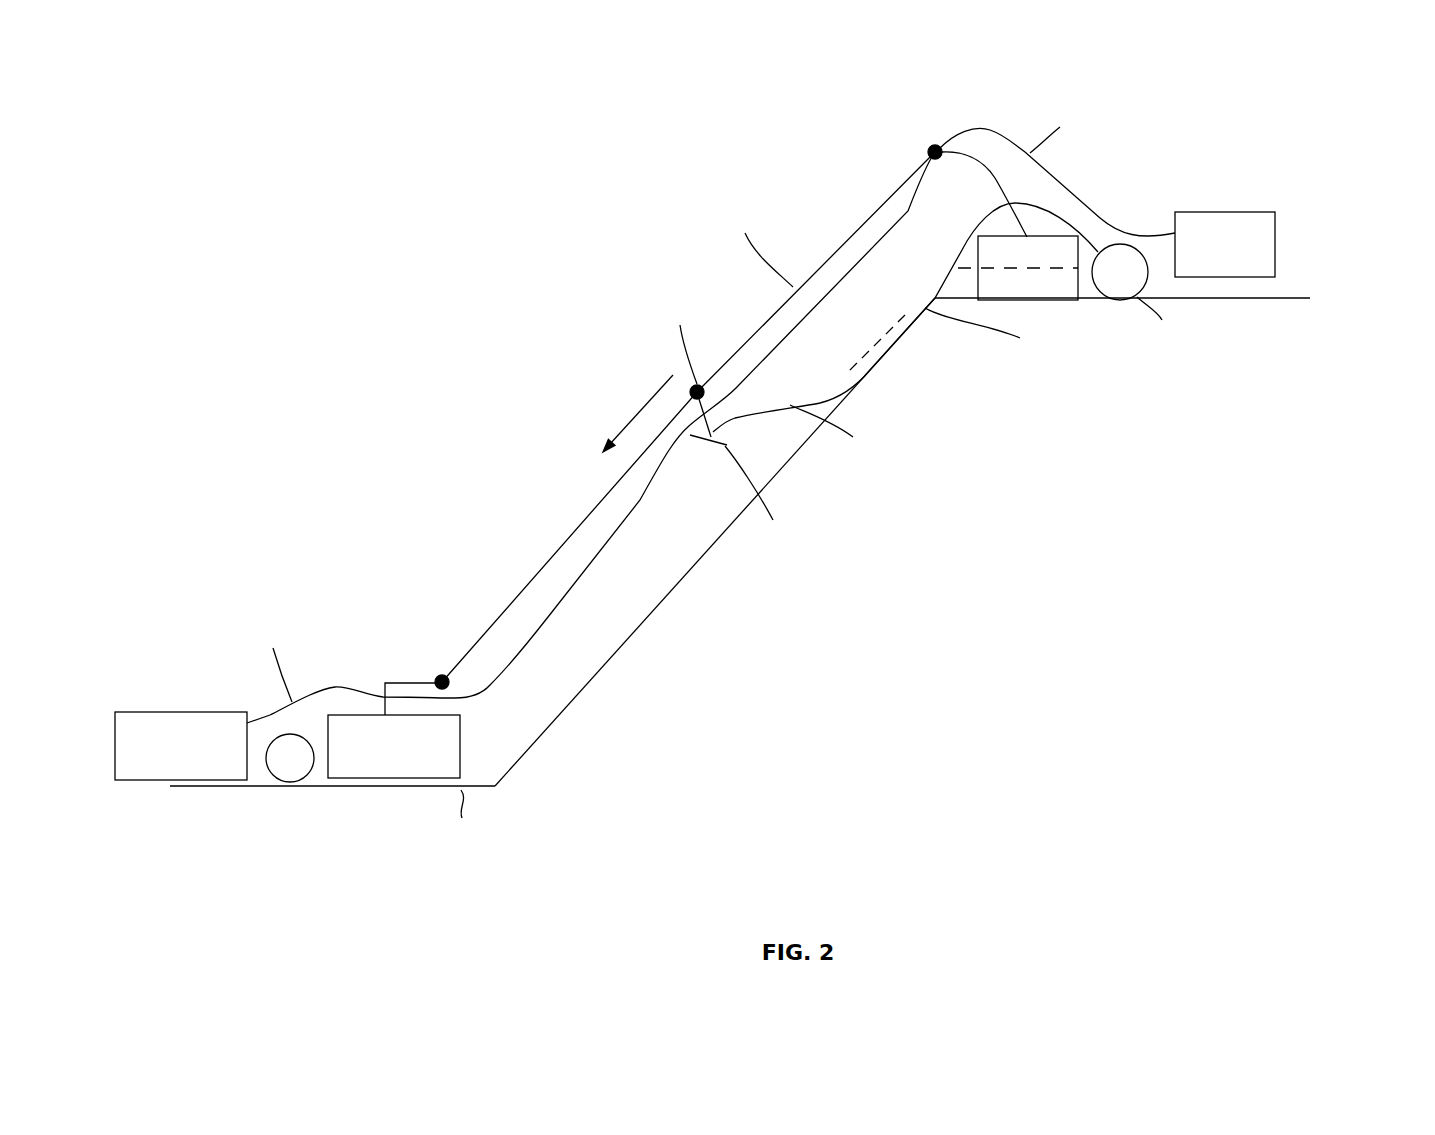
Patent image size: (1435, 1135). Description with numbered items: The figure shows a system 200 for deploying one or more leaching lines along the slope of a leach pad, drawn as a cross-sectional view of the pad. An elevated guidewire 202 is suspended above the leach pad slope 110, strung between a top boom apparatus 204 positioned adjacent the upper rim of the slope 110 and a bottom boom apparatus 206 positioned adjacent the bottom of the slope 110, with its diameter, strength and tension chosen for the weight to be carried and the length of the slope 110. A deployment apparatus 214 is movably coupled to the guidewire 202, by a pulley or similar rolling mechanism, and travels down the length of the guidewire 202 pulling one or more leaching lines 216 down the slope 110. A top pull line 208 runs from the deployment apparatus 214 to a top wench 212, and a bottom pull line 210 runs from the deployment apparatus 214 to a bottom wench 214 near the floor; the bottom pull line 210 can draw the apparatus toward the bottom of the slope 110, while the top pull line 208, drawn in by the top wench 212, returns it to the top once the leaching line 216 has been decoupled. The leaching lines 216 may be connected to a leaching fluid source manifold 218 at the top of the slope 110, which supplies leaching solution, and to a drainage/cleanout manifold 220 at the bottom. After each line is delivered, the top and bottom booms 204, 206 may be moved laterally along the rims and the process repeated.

The system 200 is at (1338, 68).
The leach pad slope 110 is at (597, 677).
The elevated guidewire 202 is at (903, 177).
The top boom apparatus 204 is at (1018, 268).
The bottom boom apparatus 206 is at (394, 730).
The top pull line 208 is at (1070, 196).
The bottom pull line 210 is at (560, 598).
The top wench 212 is at (1225, 244).
The deployment apparatus 214 is at (742, 434).
The leaching line 216 is at (870, 367).
The leaching fluid source manifold 218 is at (1160, 310).
The drainage/cleanout manifold 220 is at (290, 758).